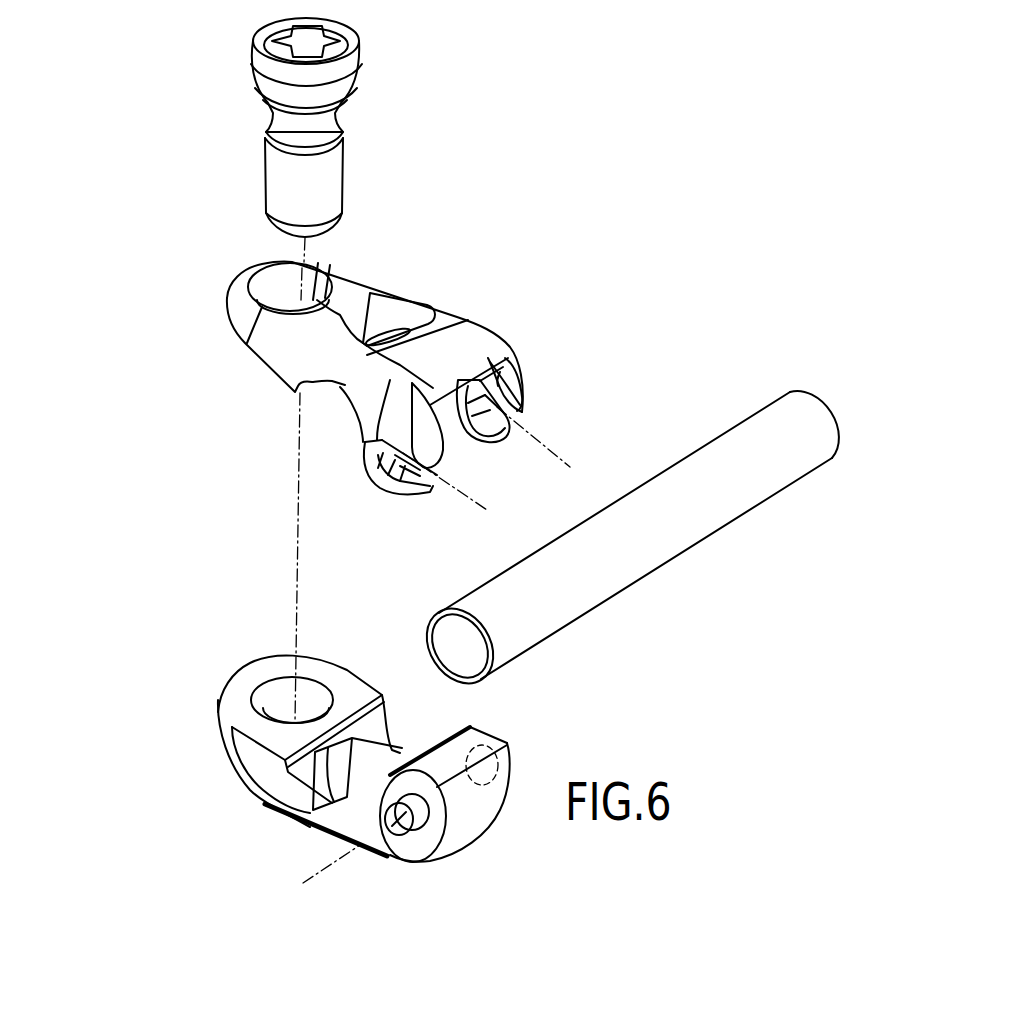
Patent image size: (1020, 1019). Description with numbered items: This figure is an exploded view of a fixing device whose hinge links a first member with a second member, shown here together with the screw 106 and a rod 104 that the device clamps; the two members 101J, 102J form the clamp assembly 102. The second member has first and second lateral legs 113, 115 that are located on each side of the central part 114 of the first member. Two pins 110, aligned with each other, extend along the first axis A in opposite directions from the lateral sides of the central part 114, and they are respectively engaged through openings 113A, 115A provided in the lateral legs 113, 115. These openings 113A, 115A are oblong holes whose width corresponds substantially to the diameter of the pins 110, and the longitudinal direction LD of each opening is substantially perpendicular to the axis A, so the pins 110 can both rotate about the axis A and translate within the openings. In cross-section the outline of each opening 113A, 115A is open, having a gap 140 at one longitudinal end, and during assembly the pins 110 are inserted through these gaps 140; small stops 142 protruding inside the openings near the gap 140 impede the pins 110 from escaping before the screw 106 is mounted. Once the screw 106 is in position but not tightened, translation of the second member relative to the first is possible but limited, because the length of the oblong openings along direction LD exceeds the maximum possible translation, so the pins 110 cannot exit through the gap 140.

The clamp assembly 102 is at (138, 452).
The upper clamp jaw 102J is at (376, 409).
The lower clamp jaw 101J is at (348, 735).
The screw 106 is at (368, 60).
The rod 104 is at (755, 430).
The first lateral leg 113 is at (403, 422).
The opening 113A is at (408, 484).
The second lateral leg 115 is at (496, 373).
The opening 115A is at (473, 382).
The gap 140 is at (523, 413).
The stop 142 is at (420, 413).
The pin 110 is at (510, 752).
The central part 114 is at (470, 802).
The longitudinal direction LD is at (487, 510).
The first axis A is at (303, 878).